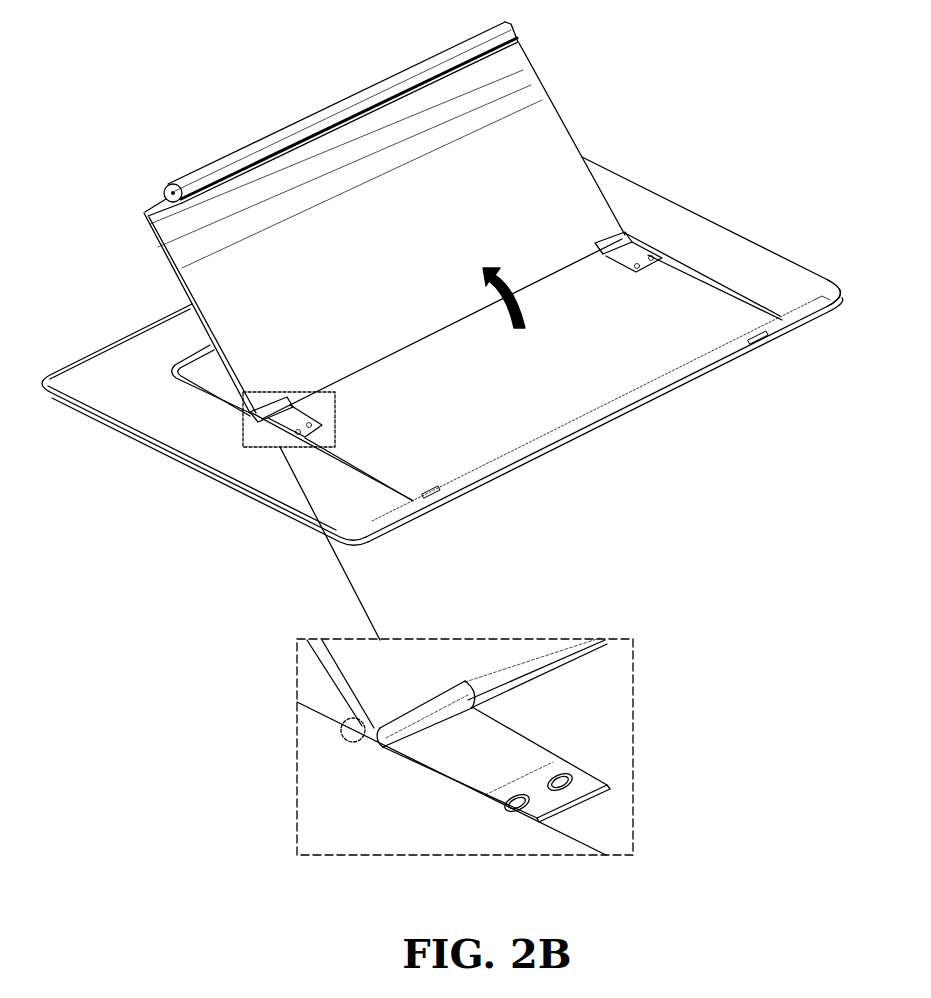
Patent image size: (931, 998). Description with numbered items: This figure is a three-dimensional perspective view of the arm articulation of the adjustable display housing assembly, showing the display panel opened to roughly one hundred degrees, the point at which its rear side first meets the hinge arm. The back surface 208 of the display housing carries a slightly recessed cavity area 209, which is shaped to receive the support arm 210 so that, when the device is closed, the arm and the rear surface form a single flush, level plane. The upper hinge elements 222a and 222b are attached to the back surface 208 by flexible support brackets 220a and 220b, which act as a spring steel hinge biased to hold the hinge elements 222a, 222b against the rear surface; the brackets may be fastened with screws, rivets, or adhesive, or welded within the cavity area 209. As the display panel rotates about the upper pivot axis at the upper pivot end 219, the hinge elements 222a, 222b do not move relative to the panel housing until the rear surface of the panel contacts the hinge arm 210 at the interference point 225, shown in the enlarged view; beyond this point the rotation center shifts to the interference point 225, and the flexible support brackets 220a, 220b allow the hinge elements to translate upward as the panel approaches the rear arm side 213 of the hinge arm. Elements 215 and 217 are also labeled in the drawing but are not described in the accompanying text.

The back surface 208 is at (127, 411).
The cavity area 209 is at (703, 318).
The support arm 210 is at (572, 143).
The rear arm side 213 is at (196, 365).
The edge of base 215 is at (797, 318).
The rod 217 is at (181, 184).
The upper pivot end 219 is at (414, 352).
The flexible support bracket 220a is at (510, 742).
The flexible support bracket 220b is at (622, 266).
The upper hinge element 222a is at (262, 410).
The upper hinge element 222b is at (628, 233).
The interference point 225 is at (350, 742).